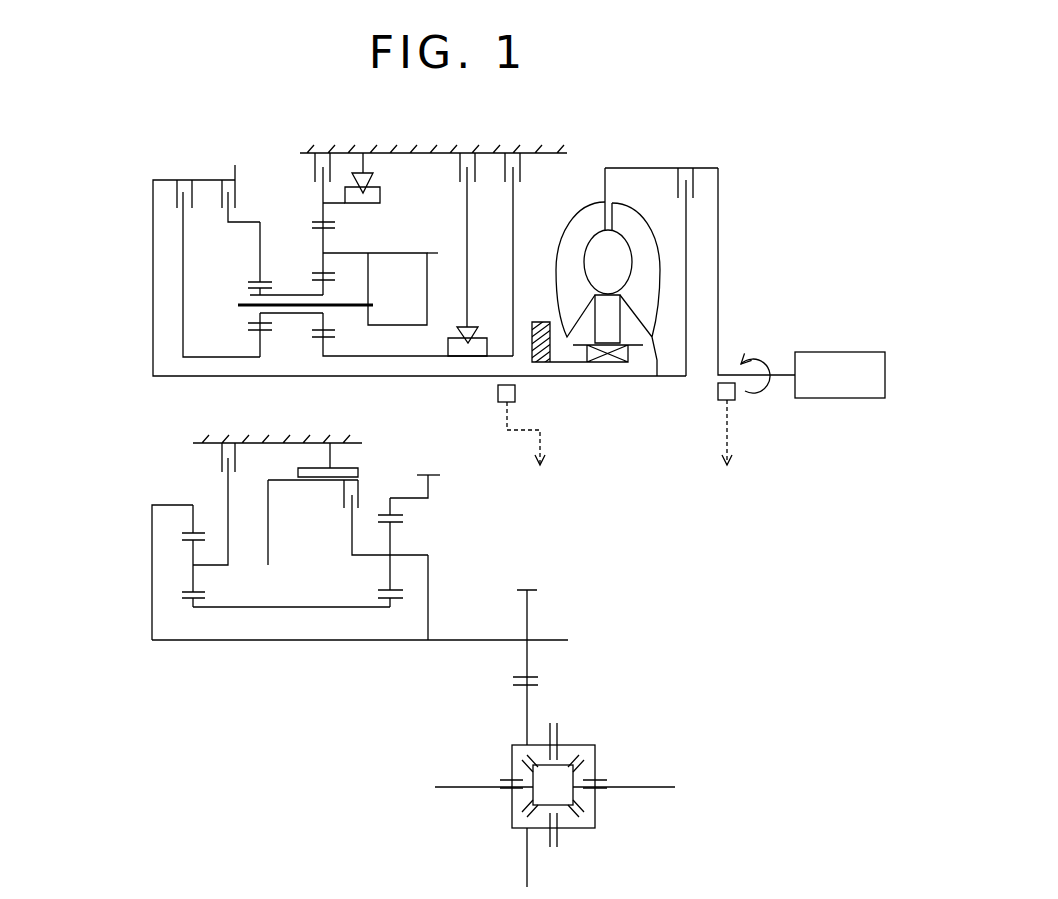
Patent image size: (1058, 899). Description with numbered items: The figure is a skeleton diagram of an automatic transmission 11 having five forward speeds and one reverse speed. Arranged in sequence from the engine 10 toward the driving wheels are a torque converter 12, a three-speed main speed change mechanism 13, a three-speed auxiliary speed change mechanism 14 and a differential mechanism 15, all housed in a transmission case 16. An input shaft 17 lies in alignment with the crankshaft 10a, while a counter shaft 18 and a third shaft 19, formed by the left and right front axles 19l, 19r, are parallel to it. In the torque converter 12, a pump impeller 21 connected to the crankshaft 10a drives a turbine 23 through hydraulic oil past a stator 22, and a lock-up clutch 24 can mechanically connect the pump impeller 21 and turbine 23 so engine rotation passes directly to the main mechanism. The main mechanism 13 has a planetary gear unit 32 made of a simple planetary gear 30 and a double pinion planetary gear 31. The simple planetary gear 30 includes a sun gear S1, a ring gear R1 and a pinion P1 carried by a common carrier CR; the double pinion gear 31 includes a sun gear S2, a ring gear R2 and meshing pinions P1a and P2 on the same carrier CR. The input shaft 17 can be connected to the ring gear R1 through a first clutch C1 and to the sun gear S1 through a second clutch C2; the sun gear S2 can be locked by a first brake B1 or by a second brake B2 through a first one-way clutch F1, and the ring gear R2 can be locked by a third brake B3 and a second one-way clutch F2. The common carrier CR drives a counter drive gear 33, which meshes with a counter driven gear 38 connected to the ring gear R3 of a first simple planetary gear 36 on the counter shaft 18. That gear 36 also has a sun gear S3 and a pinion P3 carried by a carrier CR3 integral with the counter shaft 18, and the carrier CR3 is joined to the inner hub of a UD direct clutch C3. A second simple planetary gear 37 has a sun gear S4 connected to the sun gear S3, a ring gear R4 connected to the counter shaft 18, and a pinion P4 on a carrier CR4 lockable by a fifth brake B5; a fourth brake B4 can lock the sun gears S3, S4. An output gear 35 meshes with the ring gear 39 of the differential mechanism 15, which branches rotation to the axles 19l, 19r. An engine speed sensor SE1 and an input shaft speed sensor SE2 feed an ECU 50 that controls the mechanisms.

The engine 10 is at (853, 351).
The crankshaft 10a is at (718, 245).
The automatic transmission 11 is at (741, 598).
The torque converter 12 is at (641, 158).
The three-speed main speed change mechanism 13 is at (110, 180).
The three-speed auxiliary speed change mechanism 14 is at (107, 467).
The differential mechanism 15 is at (644, 667).
The transmission case 16 is at (423, 151).
The input shaft 17 is at (577, 377).
The counter shaft 18 is at (280, 640).
The third shaft 19 is at (604, 813).
The left front axle 19l is at (453, 788).
The right front axle 19r is at (657, 788).
The pump impeller 21 is at (575, 218).
The stator 22 is at (623, 331).
The turbine 23 is at (650, 227).
The lock-up clutch 24 is at (700, 190).
The simple planetary gear 30 is at (247, 213).
The double pinion planetary gear 31 is at (306, 211).
The planetary gear unit 32 is at (305, 103).
The counter drive gear 33 is at (438, 253).
The output gear 35 is at (533, 588).
The first simple planetary gear 36 is at (383, 614).
The second simple planetary gear 37 is at (198, 614).
The counter driven gear 38 is at (433, 468).
The ring gear 39 is at (527, 700).
The ECU 50 is at (624, 450).
The first brake B1 is at (512, 235).
The second brake B2 is at (467, 148).
The third brake B3 is at (322, 148).
The fourth brake B4 is at (313, 486).
The fifth brake B5 is at (223, 439).
The first clutch C1 is at (233, 187).
The second clutch C2 is at (213, 254).
The UD direct clutch C3 is at (386, 512).
The common carrier CR is at (372, 278).
The carrier CR3 is at (428, 577).
The carrier CR4 is at (228, 497).
The first one-way clutch F1 is at (475, 261).
The second one-way clutch F2 is at (362, 159).
The pinion P1 is at (258, 296).
The pinion P1a is at (323, 290).
The pinion P2 is at (322, 258).
The pinion P3 is at (390, 573).
The pinion P4 is at (193, 550).
The ring gear R1 is at (260, 257).
The ring gear R2 is at (327, 210).
The ring gear R3 is at (403, 518).
The ring gear R4 is at (193, 517).
The sun gear S1 is at (258, 347).
The sun gear S2 is at (323, 345).
The sun gear S3 is at (378, 600).
The sun gear S4 is at (205, 600).
The engine speed sensor SE1 is at (737, 397).
The input shaft speed sensor SE2 is at (498, 393).